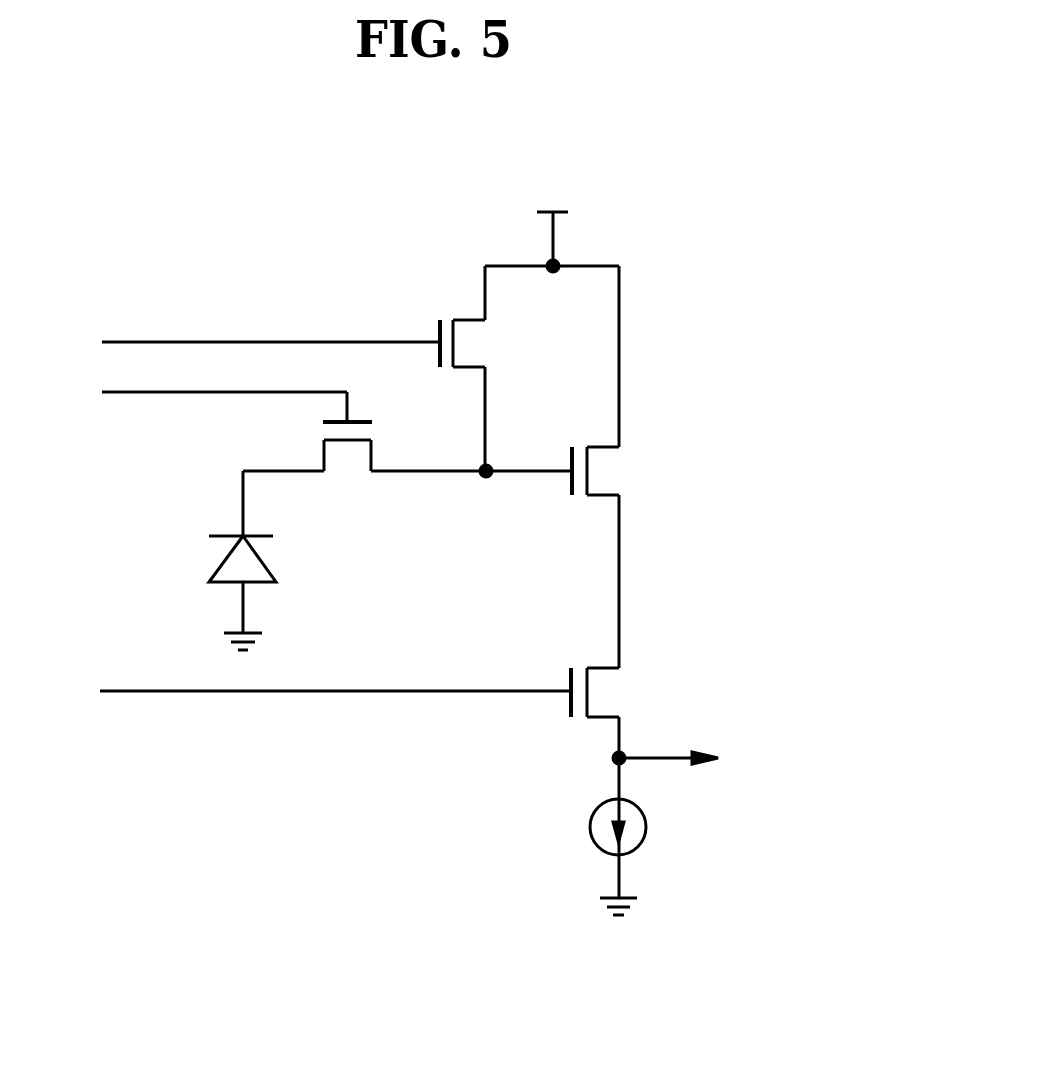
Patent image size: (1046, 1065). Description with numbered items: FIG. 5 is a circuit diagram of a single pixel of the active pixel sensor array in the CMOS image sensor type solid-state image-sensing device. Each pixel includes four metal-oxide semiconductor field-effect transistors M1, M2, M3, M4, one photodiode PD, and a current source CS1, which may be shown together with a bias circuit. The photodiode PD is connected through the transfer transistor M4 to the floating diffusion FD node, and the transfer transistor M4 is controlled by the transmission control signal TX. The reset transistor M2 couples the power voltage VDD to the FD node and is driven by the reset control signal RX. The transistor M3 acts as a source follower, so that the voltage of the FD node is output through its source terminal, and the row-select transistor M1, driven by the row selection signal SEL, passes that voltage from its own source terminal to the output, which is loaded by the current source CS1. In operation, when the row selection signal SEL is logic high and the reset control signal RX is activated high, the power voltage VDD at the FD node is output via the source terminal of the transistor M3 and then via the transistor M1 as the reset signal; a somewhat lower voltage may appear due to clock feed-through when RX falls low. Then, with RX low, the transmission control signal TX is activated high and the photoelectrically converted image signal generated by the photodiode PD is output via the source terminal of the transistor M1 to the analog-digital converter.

The MOSFET M1 is at (614, 692).
The MOSFET M2 is at (484, 343).
The MOSFET M3 is at (617, 471).
The MOSFET M4 is at (347, 466).
The photodiode PD is at (269, 560).
The current source CS1 is at (650, 857).
The FD node FD is at (407, 493).
The power voltage VDD is at (553, 220).
The reset control signal RX is at (249, 341).
The transmission control signal TX is at (204, 396).
The row selection signal SEL is at (303, 691).